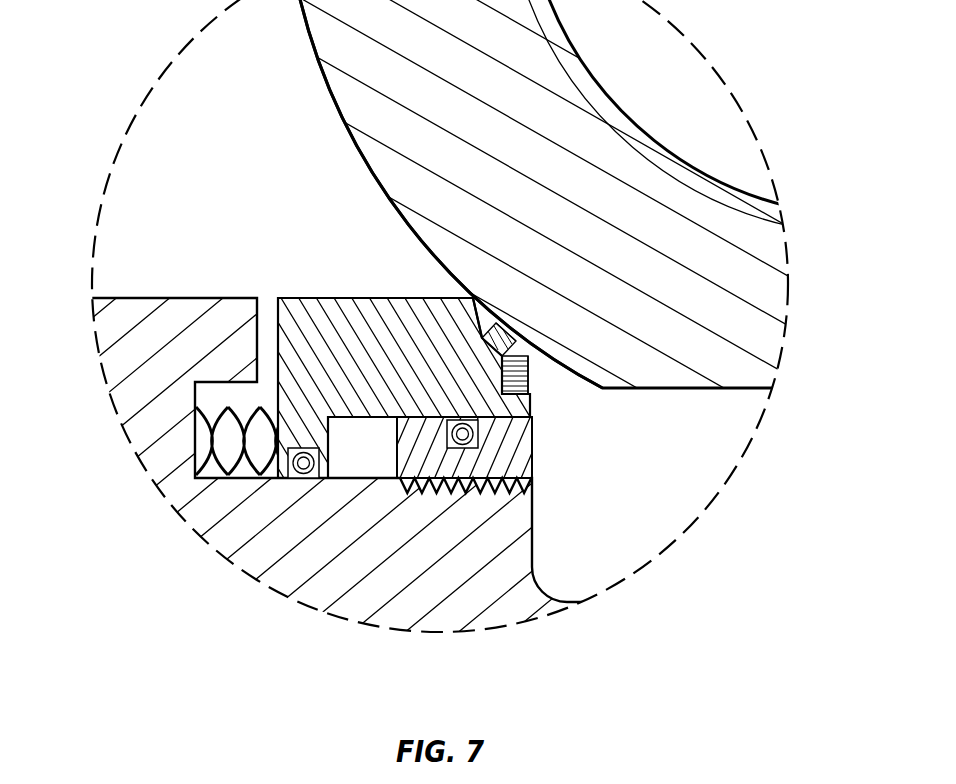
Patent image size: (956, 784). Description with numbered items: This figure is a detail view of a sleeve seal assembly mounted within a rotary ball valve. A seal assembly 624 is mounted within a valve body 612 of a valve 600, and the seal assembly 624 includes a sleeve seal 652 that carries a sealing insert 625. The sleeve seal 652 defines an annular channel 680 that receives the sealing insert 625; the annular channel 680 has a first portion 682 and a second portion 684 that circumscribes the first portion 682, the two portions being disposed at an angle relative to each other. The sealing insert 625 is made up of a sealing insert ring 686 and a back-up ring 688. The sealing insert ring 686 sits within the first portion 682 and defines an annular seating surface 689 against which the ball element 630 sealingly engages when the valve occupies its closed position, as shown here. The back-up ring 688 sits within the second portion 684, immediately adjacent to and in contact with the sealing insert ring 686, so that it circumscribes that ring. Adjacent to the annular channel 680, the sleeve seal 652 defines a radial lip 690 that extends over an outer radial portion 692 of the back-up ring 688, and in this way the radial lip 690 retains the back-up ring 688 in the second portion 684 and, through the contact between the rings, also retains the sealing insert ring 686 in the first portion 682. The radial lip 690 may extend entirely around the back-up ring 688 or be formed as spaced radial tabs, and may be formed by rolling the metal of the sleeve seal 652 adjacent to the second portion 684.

The valve 600 is at (478, 499).
The valve body 612 is at (118, 372).
The seal assembly 624 is at (286, 287).
The sealing insert 625 is at (509, 306).
The ball element 630 is at (608, 143).
The sleeve seal 652 is at (373, 325).
The annular channel 680 is at (528, 367).
The first portion 682 is at (520, 334).
The second portion 684 is at (507, 366).
The sealing insert ring 686 is at (488, 337).
The back-up ring 688 is at (528, 378).
The annular seating surface 689 is at (497, 338).
The radial lip 690 is at (483, 383).
The outer radial portion 692 is at (483, 383).